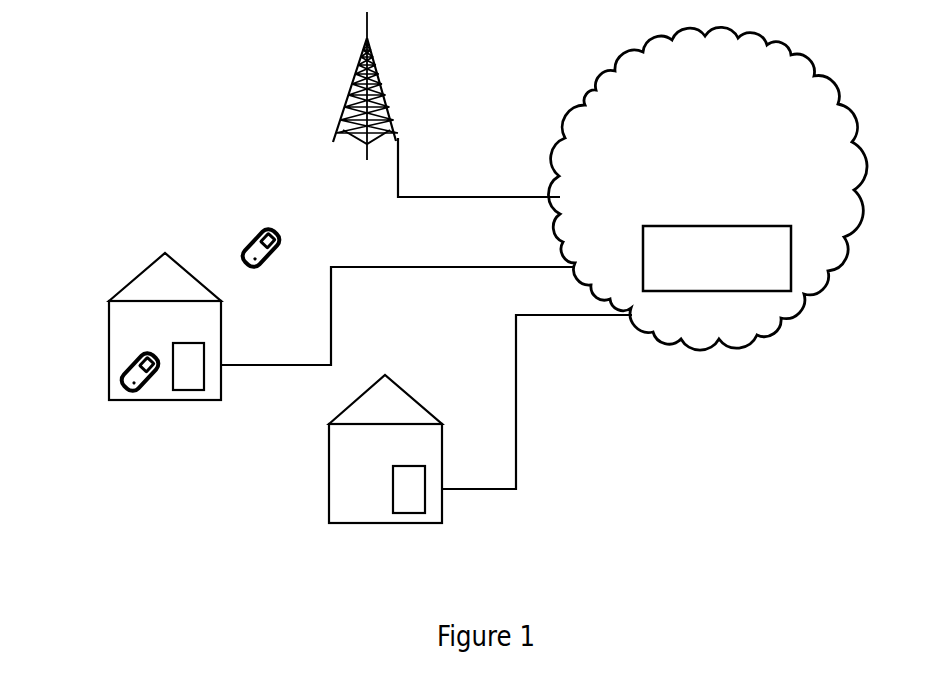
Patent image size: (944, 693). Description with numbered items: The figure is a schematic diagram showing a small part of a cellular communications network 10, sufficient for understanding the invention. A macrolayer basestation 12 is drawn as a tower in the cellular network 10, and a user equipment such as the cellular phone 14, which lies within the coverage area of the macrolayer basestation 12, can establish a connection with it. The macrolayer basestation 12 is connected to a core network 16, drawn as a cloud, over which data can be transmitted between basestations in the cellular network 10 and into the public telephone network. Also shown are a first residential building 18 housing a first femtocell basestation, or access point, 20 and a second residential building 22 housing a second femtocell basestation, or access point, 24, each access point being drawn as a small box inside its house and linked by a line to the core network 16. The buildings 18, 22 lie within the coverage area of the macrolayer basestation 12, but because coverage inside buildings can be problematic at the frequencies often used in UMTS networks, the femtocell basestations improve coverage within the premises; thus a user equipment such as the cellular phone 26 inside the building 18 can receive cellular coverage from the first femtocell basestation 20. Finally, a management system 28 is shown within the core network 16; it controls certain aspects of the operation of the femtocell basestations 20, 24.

The cellular communications network 10 is at (457, 63).
The macrolayer basestation 12 is at (366, 30).
The cellular phone 14 is at (282, 250).
The core network 16 is at (777, 42).
The first residential building 18 is at (107, 315).
The first femtocell basestation 20 is at (183, 392).
The second residential building 22 is at (327, 445).
The second femtocell basestation 24 is at (407, 513).
The cellular phone 26 is at (143, 354).
The management system 28 is at (678, 292).